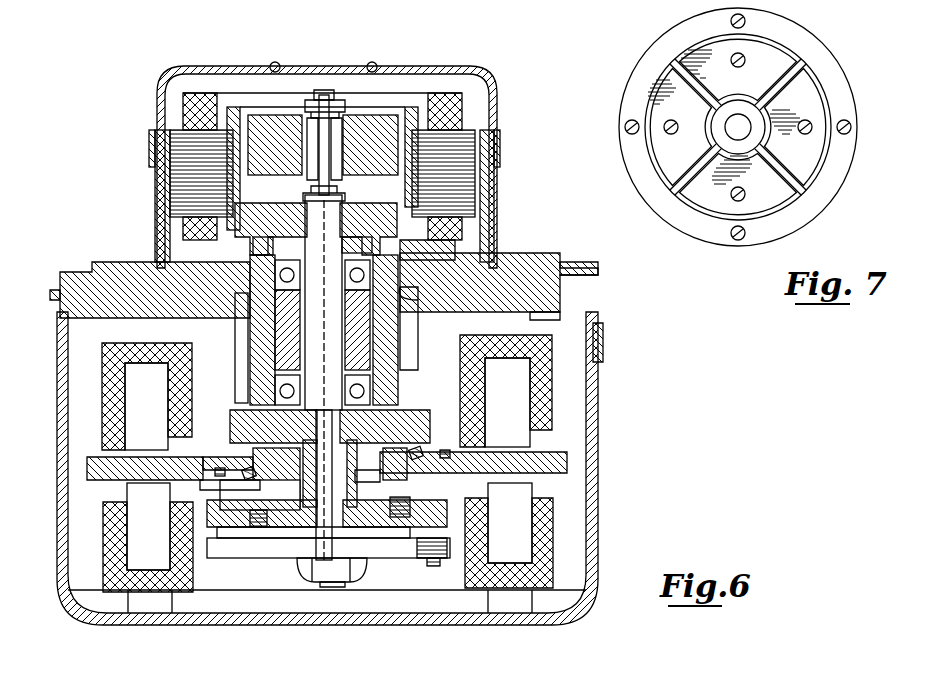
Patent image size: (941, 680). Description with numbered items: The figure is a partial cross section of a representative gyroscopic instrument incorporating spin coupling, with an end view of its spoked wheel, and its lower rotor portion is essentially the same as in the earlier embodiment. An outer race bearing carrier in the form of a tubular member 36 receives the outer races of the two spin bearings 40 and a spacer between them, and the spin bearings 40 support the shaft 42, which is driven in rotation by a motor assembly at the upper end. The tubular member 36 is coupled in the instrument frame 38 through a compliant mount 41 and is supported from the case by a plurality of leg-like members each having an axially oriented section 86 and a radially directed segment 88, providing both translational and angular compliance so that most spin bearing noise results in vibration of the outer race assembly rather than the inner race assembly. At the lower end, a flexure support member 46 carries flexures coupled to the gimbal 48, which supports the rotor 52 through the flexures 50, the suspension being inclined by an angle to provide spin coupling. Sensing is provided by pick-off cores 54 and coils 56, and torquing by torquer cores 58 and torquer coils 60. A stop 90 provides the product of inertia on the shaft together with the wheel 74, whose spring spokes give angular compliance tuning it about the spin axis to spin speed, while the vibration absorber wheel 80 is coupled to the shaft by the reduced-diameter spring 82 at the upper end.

In FIG. 6, the tubular member 36 is at (258, 317).
In FIG. 6, the instrument frame 38 is at (108, 266).
In FIG. 6, the spin bearings 40 is at (270, 255).
In FIG. 6, the compliant mount 41 is at (418, 337).
In FIG. 6, the shaft 42 is at (337, 309).
In FIG. 6, the flexure support member 46 is at (410, 423).
In FIG. 6, the gimbal 48 is at (283, 455).
In FIG. 6, the flexures 50 is at (220, 473).
In FIG. 6, the rotor 52 is at (90, 468).
In FIG. 6, the pick-off cores 54 is at (128, 400).
In FIG. 6, the pick-off coils 56 is at (137, 390).
In FIG. 6, the torquer cores 58 is at (110, 540).
In FIG. 6, the torquer coils 60 is at (140, 527).
In FIG. 6, the wheel 74 is at (407, 553).
In FIG. 7, the wheel 74 is at (628, 93).
In FIG. 6, the vibration absorber wheel 80 is at (283, 125).
In FIG. 6, the spring 82 is at (322, 150).
In FIG. 6, the axially oriented section 86 is at (235, 355).
In FIG. 6, the radially directed segment 88 is at (440, 295).
In FIG. 6, the stop 90 is at (283, 520).